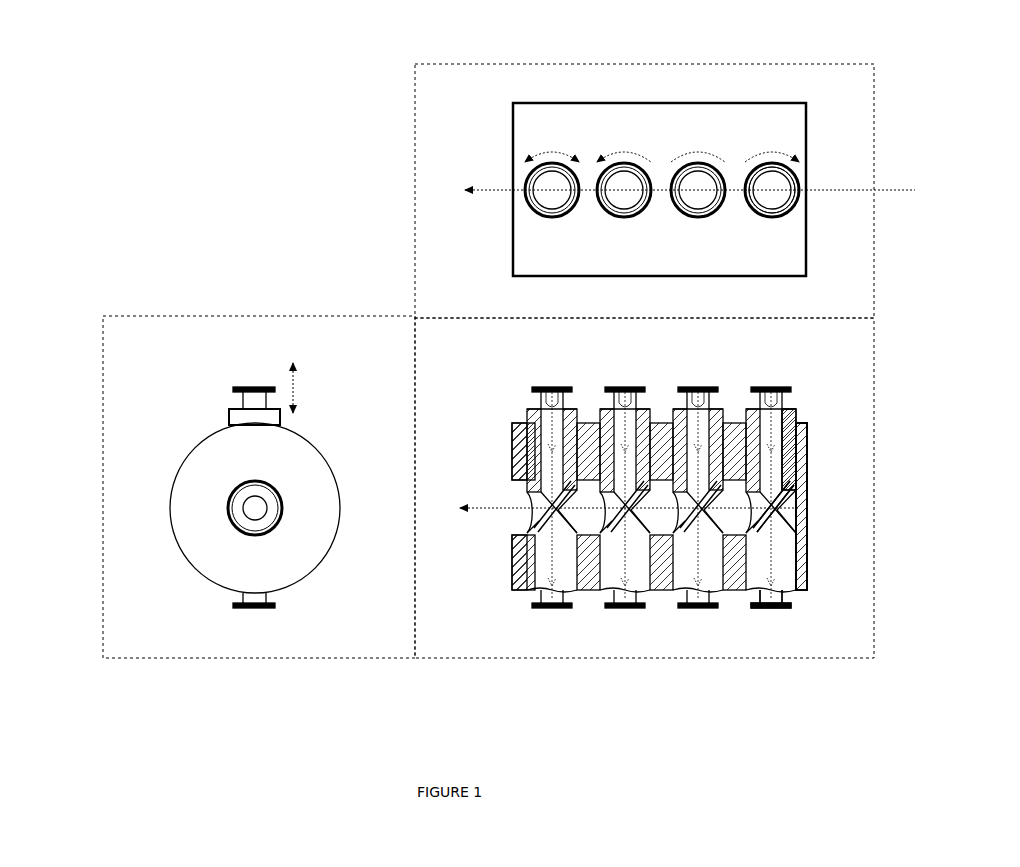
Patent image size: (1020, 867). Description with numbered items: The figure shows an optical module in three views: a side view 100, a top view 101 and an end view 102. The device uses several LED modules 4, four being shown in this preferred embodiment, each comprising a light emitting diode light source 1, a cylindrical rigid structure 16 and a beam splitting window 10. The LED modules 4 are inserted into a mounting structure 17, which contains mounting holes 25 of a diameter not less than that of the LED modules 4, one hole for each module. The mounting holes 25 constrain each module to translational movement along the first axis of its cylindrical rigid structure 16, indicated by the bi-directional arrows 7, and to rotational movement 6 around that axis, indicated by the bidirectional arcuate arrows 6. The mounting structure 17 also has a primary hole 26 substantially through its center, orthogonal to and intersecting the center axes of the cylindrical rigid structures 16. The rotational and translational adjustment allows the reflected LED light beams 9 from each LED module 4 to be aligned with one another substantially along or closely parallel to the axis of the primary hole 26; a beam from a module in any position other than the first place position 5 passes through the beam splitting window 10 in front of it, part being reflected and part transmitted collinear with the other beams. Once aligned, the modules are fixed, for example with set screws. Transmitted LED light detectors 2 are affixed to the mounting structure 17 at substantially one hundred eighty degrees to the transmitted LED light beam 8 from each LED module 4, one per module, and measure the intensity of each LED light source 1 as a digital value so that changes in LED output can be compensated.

The light emitting diode light source 1 is at (780, 176).
The transmitted LED light detector 2 is at (255, 608).
The LED module 4 is at (790, 212).
The first place position 5 is at (552, 128).
The rotational movement 6 is at (780, 148).
The bi-directional arrows 7 is at (280, 368).
The transmitted LED light beam 8 is at (775, 565).
The reflected LED light beam 9 is at (498, 185).
The beam splitting window 10 is at (793, 500).
The cylindrical rigid structure 16 is at (795, 206).
The mounting structure 17 is at (808, 253).
The mounting hole 25 is at (795, 455).
The primary hole 26 is at (226, 524).
The side view 100 is at (855, 121).
The top view 101 is at (850, 605).
The end view 102 is at (130, 628).